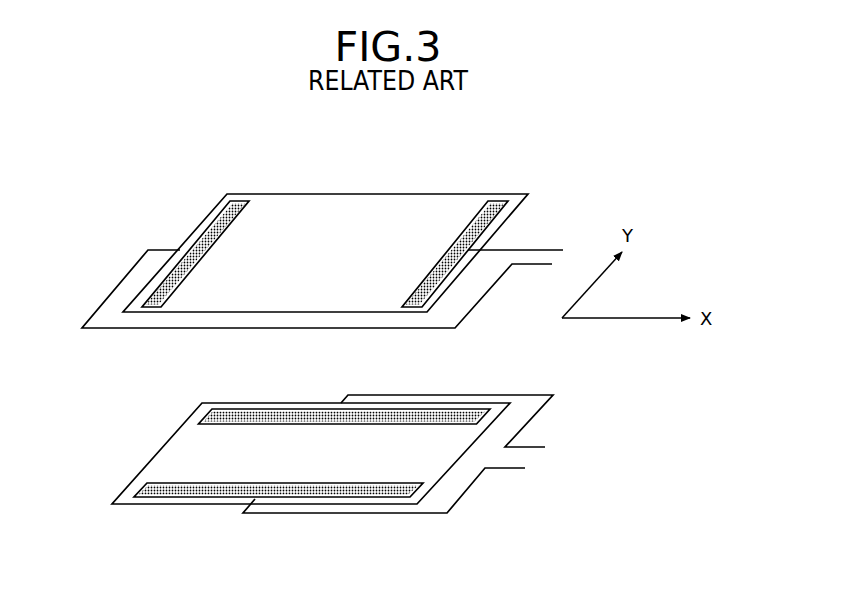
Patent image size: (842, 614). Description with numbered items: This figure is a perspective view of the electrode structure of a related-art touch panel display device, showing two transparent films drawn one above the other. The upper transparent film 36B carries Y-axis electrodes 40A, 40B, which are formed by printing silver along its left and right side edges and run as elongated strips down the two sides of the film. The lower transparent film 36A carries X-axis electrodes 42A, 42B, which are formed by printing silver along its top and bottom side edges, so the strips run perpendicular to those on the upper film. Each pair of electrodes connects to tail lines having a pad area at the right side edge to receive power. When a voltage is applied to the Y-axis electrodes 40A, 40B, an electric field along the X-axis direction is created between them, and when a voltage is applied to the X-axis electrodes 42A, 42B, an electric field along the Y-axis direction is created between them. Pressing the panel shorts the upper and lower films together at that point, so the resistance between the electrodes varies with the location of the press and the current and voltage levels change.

The lower transparent film 36A is at (160, 447).
The upper transparent film 36B is at (322, 239).
The Y-axis electrode 40A is at (227, 206).
The Y-axis electrode 40B is at (520, 201).
The X-axis electrode 42A is at (258, 411).
The X-axis electrode 42B is at (205, 498).